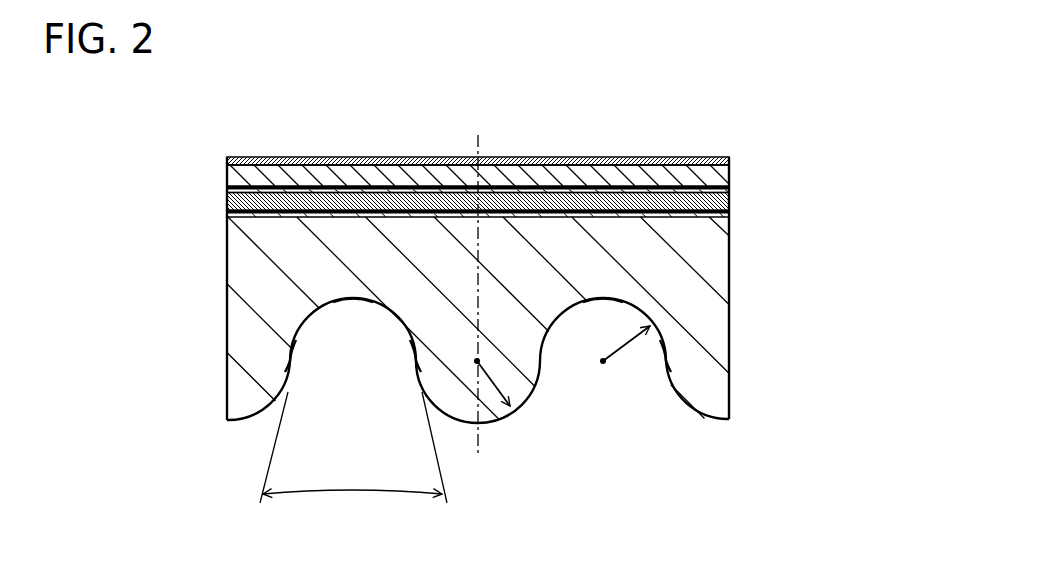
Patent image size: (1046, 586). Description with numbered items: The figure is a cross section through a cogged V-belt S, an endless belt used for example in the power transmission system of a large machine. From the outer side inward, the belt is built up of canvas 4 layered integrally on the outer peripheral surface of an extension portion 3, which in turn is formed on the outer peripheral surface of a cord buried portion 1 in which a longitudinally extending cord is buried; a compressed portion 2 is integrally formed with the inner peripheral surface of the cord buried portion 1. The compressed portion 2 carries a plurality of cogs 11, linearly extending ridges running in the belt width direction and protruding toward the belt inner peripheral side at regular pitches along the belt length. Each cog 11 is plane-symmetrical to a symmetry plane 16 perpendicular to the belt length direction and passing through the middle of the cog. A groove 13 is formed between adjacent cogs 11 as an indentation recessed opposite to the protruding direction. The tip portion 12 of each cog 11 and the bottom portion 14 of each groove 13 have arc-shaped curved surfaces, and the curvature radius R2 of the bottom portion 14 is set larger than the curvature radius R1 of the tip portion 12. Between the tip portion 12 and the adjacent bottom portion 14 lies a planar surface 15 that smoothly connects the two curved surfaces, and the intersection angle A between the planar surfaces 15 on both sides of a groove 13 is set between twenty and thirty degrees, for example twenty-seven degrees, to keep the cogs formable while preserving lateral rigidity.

The cogged V-belt S is at (740, 96).
The cord buried portion 1 is at (221, 205).
The compressed portion 2 is at (227, 302).
The extension portion 3 is at (227, 174).
The canvas 4 is at (227, 162).
The cog 11 is at (250, 378).
The tip portion 12 is at (243, 423).
The groove 13 is at (371, 340).
The bottom portion 14 is at (354, 297).
The planar surface 15 is at (289, 358).
The symmetry plane 16 is at (475, 456).
The curvature radius of the tip portion R1 is at (499, 412).
The curvature radius of the bottom portion R2 is at (628, 345).
The intersection angle A is at (353, 463).